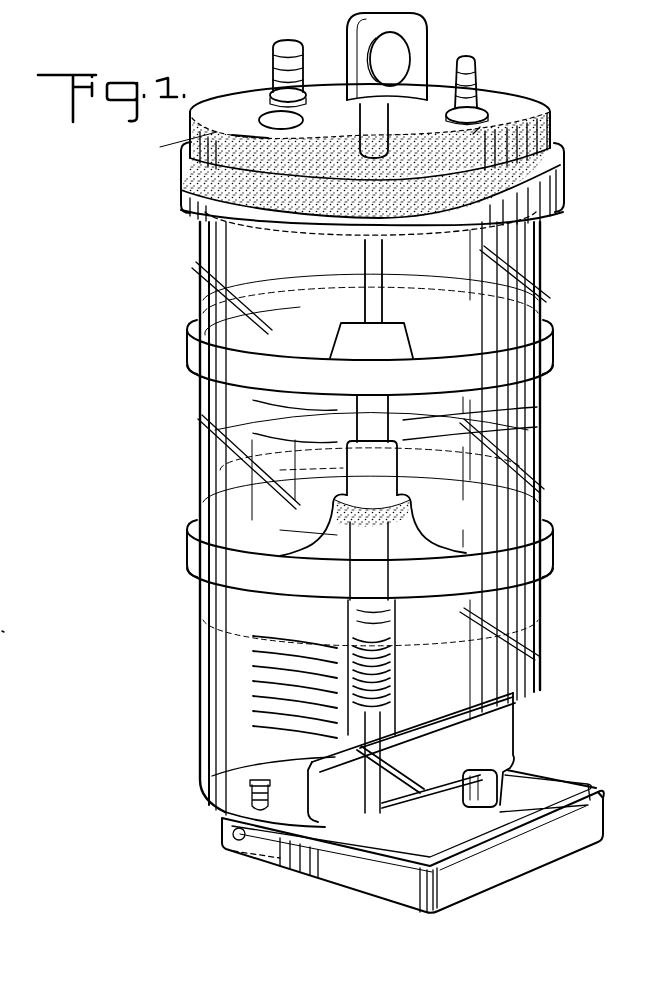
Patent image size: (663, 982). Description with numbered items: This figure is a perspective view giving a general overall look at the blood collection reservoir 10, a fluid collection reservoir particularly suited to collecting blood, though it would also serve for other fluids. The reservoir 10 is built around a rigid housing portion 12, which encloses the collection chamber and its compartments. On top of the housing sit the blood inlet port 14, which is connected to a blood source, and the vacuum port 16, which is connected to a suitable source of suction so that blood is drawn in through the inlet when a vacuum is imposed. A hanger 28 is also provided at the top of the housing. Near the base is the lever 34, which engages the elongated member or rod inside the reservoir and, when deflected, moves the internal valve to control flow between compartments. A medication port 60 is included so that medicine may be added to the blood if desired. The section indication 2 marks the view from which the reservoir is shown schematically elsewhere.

The section line of FIG. 2 is at (214, 43).
The blood collection reservoir 10 is at (150, 300).
The rigid housing portion 12 is at (540, 497).
The blood inlet port 14 is at (275, 67).
The vacuum port 16 is at (478, 72).
The hanger 28 is at (426, 46).
The lever 34 is at (535, 865).
The medication port 60 is at (164, 146).